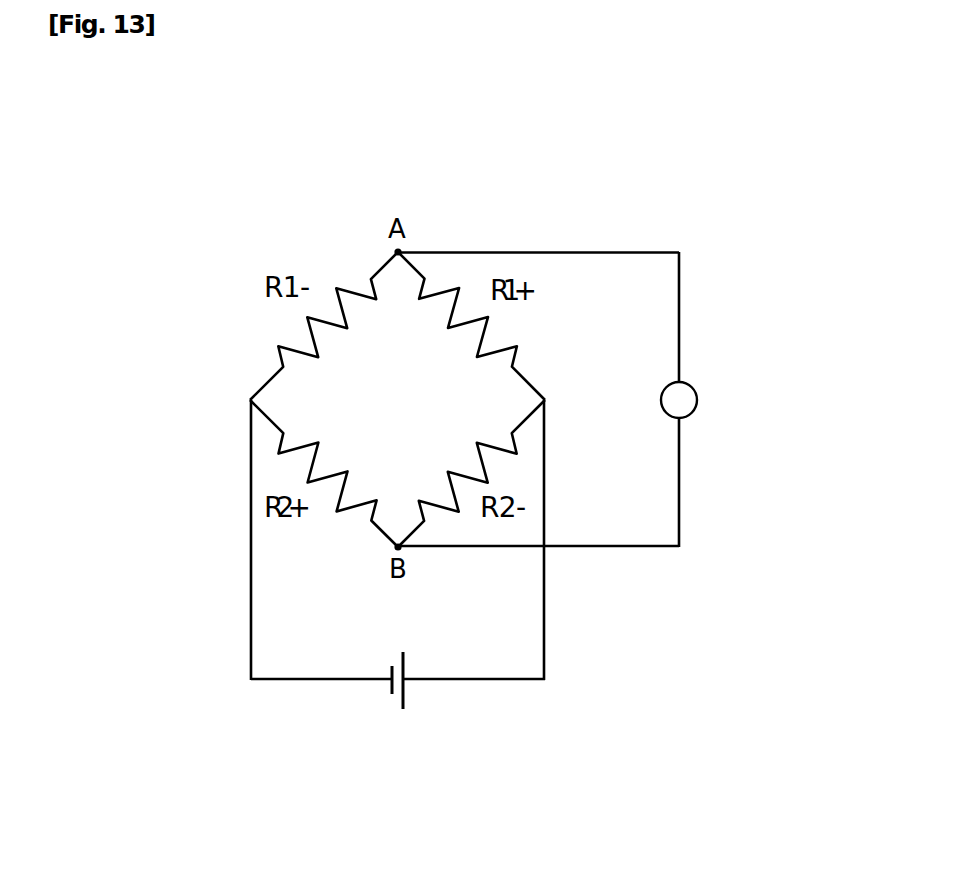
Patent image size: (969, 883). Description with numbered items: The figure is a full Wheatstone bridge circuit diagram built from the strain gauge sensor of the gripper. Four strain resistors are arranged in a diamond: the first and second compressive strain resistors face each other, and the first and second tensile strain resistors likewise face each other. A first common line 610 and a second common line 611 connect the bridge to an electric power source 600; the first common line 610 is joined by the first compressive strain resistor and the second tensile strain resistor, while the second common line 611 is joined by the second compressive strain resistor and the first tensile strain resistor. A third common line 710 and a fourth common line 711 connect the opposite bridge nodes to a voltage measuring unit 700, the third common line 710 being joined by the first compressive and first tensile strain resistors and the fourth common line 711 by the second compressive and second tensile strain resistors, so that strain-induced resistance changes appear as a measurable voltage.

The third common line 710 is at (581, 253).
The voltage measuring unit 700 is at (697, 399).
The fourth common line 711 is at (638, 547).
The first common line 610 is at (251, 602).
The second common line 611 is at (545, 632).
The electric power source 600 is at (422, 704).